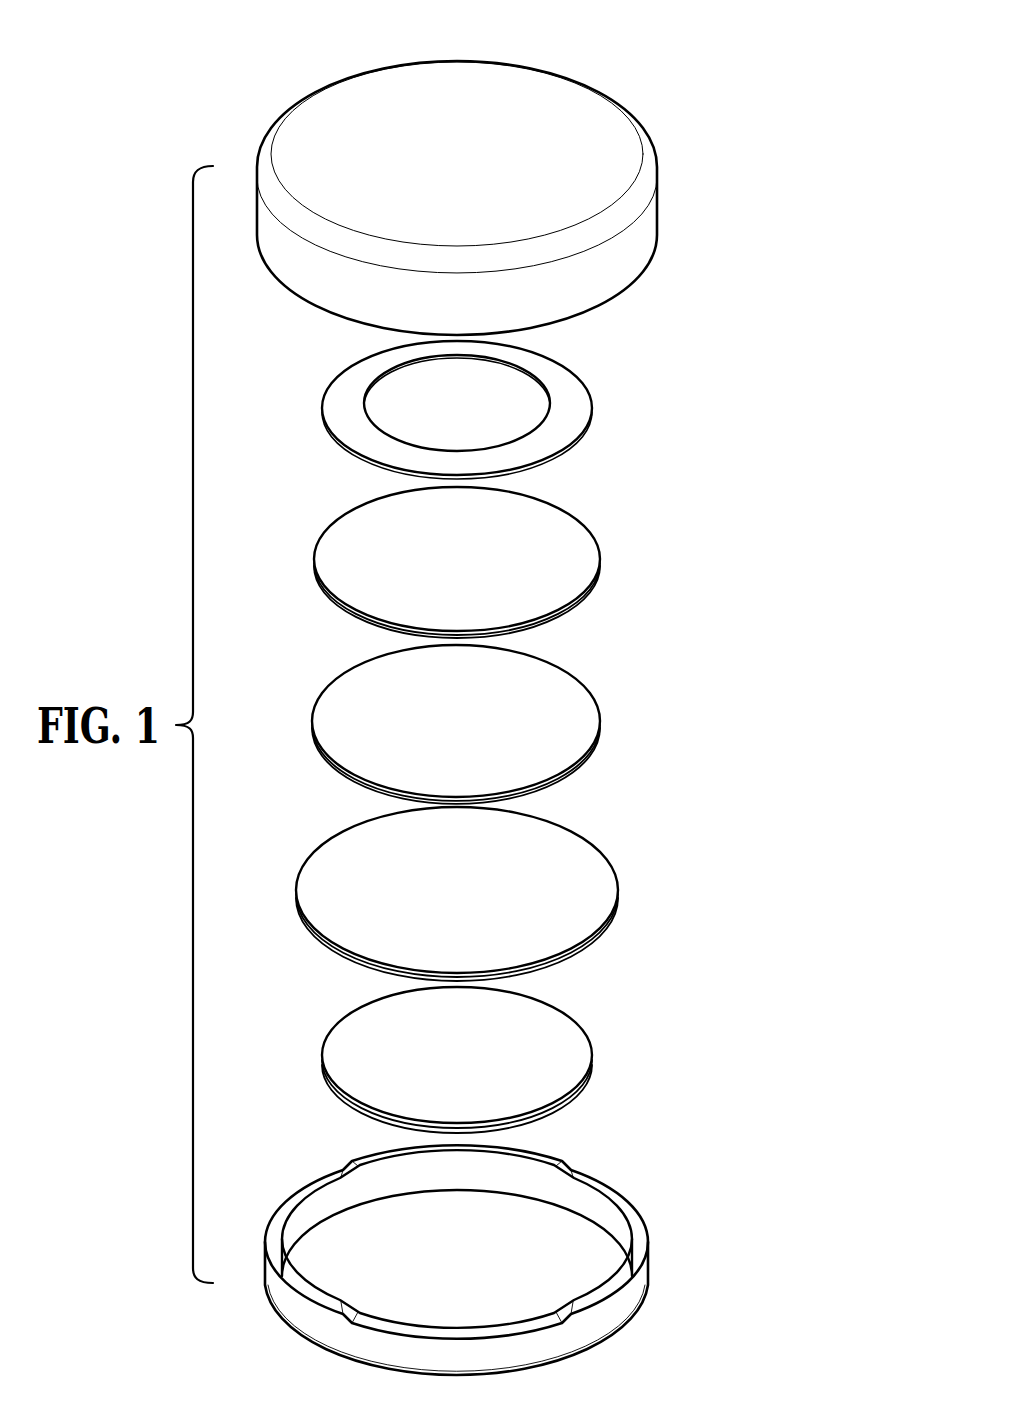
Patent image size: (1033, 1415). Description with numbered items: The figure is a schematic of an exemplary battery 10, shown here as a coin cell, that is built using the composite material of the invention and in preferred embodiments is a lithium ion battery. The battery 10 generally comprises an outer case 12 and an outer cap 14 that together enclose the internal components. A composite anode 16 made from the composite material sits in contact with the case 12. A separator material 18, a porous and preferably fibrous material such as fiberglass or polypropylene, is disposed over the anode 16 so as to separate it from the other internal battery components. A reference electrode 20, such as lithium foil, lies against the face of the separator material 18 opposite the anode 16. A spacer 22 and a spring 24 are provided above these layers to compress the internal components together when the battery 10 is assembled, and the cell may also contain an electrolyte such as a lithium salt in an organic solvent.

The battery 10 is at (722, 104).
The outer case 12 is at (623, 1313).
The outer cap 14 is at (628, 252).
The composite anode 16 is at (570, 1055).
The separator material 18 is at (594, 889).
The reference electrode 20 is at (578, 718).
The spacer 22 is at (577, 562).
The spring 24 is at (572, 398).